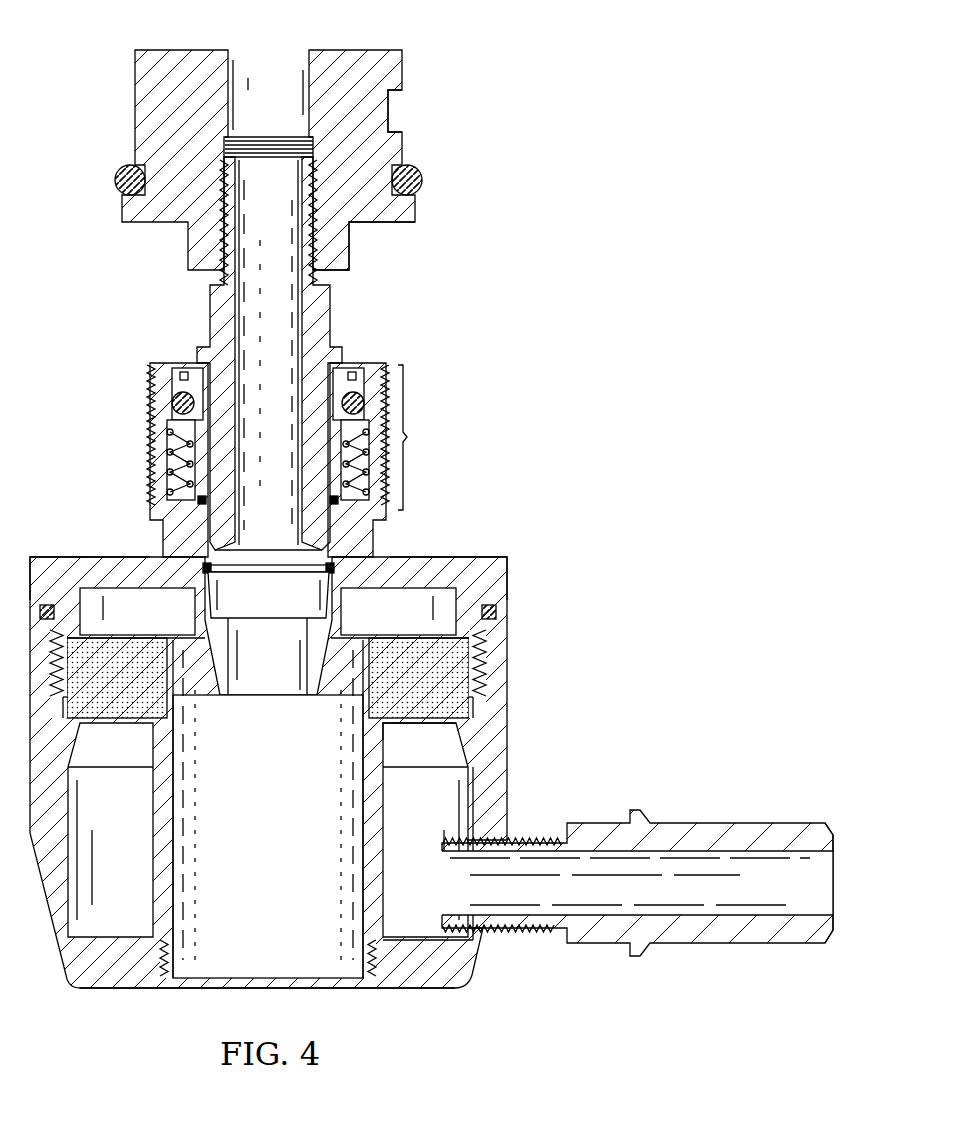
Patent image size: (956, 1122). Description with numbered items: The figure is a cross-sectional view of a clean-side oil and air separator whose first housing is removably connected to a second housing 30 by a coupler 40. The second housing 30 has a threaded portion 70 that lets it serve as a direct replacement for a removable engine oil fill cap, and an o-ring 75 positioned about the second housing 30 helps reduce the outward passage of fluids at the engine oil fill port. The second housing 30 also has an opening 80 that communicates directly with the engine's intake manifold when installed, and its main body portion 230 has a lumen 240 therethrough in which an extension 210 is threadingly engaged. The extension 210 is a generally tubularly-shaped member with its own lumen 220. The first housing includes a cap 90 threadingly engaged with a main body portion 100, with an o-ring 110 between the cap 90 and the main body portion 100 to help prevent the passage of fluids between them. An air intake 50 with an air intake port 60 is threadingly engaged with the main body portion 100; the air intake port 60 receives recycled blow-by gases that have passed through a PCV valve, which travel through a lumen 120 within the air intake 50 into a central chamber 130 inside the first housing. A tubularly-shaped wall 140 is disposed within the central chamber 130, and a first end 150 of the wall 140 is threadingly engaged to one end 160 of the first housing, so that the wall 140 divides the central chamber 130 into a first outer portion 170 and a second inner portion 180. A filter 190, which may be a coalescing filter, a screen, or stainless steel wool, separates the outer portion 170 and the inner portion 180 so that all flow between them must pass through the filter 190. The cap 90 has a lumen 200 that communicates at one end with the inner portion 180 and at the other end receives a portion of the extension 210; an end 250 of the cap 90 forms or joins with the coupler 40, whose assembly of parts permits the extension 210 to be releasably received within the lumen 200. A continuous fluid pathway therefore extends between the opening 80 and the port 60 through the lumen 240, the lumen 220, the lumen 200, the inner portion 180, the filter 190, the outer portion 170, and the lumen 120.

The second housing 30 is at (134, 100).
The coupler 40 is at (419, 437).
The air intake 50 is at (768, 822).
The air intake port 60 is at (826, 904).
The threaded portion 70 is at (398, 112).
The o-ring 75 is at (116, 186).
The opening 80 is at (262, 58).
The cap 90 is at (55, 556).
The main body portion 100 is at (508, 716).
The o-ring 110 is at (502, 612).
The lumen 120 is at (688, 905).
The central chamber 130 is at (118, 597).
The wall 140 is at (178, 888).
The first end 150 is at (362, 946).
The end 160 is at (405, 990).
The first outer portion 170 is at (92, 816).
The second inner portion 180 is at (249, 861).
The filter 190 is at (390, 735).
The lumen 200 is at (194, 372).
The extension 210 is at (208, 302).
The lumen 220 is at (250, 379).
The main body portion 230 is at (352, 248).
The lumen 240 is at (250, 118).
The end 250 is at (346, 372).